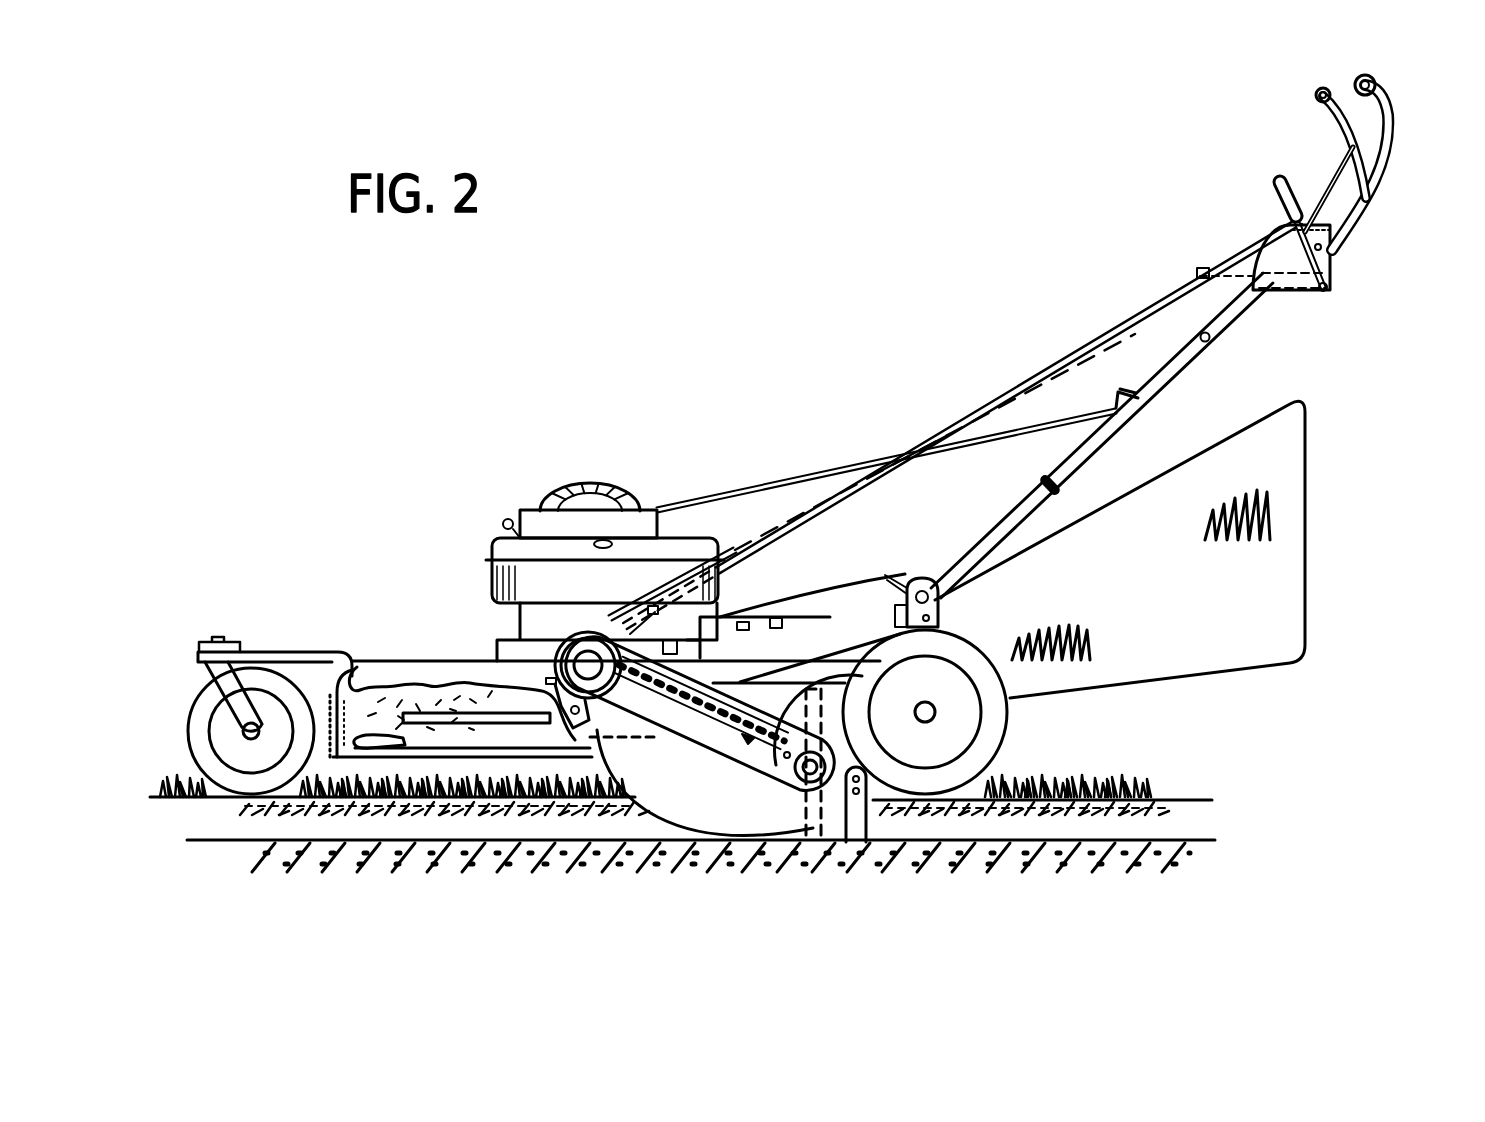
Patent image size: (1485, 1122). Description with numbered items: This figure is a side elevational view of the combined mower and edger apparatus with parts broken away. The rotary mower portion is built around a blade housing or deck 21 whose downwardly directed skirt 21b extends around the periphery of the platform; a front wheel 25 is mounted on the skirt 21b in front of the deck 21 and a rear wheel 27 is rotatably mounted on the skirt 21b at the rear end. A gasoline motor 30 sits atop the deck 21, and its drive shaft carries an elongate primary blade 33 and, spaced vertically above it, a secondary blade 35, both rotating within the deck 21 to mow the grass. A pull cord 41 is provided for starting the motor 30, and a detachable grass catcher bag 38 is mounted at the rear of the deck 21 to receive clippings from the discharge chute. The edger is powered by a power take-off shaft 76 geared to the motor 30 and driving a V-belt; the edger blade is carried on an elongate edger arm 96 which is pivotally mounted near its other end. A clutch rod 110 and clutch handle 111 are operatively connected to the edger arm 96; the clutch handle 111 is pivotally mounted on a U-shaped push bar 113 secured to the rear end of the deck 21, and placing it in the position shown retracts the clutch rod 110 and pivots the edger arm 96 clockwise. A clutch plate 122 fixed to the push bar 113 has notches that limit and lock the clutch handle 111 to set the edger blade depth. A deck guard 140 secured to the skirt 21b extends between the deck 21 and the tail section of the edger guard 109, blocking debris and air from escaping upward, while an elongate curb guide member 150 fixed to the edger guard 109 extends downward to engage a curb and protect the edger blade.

The blade housing or deck 21 is at (458, 649).
The skirt 21b is at (327, 707).
The front wheel 25 is at (188, 713).
The rear wheel 27 is at (1010, 729).
The gasoline motor 30 is at (520, 495).
The primary blade 33 is at (401, 727).
The secondary blade 35 is at (488, 726).
The grass catcher bag 38 is at (1306, 410).
The pull cord 41 is at (785, 481).
The power take-off shaft 76 is at (574, 663).
The edger arm 96 is at (728, 776).
The edger guard 109 is at (703, 827).
The clutch rod 110 is at (1065, 342).
The clutch handle 111 is at (1272, 192).
The U-shaped push bar 113 is at (1393, 114).
The clutch plate 122 is at (1333, 262).
The deck guard 140 is at (611, 723).
The curb guide member 150 is at (872, 826).